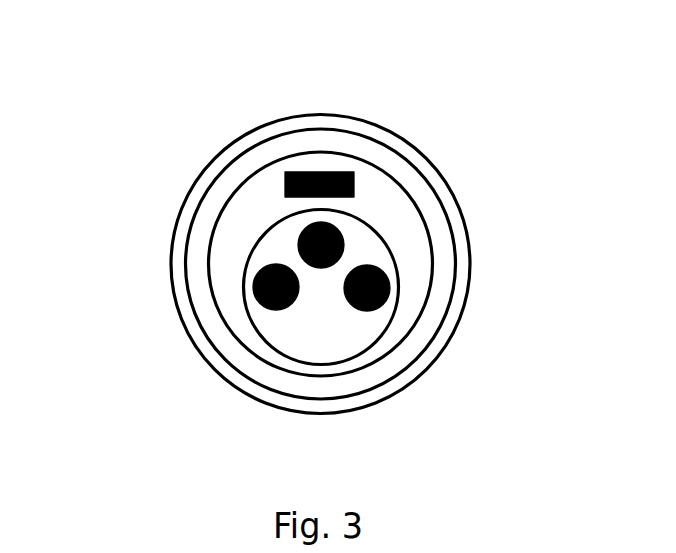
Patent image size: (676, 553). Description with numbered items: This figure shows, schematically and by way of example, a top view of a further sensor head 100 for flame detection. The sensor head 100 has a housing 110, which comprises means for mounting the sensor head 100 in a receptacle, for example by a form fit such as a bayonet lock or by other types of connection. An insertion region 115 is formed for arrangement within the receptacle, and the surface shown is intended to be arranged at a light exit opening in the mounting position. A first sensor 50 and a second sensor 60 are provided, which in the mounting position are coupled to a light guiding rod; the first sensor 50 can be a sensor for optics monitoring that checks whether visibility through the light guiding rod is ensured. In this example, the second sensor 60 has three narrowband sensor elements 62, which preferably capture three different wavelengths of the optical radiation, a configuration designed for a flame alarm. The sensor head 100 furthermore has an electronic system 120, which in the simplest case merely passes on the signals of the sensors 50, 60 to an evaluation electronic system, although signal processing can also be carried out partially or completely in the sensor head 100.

The sensor head 100 is at (414, 97).
The housing 110 is at (266, 386).
The insertion region 115 is at (264, 194).
The electronic system 120 is at (232, 235).
The first sensor 50 is at (317, 172).
The second sensor 60 is at (388, 330).
The narrowband sensor elements 62 is at (253, 297).